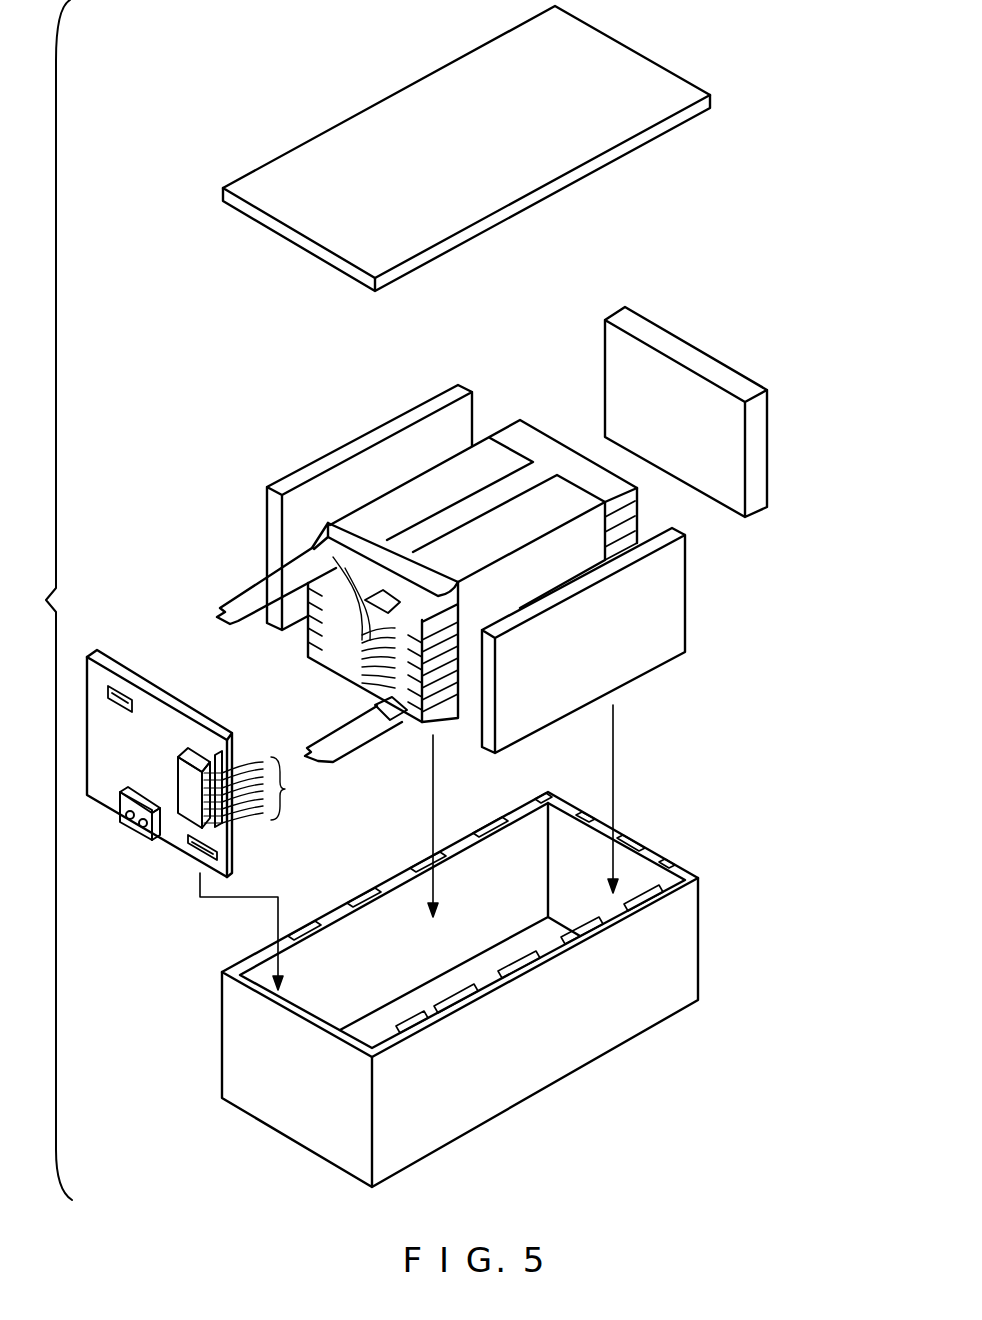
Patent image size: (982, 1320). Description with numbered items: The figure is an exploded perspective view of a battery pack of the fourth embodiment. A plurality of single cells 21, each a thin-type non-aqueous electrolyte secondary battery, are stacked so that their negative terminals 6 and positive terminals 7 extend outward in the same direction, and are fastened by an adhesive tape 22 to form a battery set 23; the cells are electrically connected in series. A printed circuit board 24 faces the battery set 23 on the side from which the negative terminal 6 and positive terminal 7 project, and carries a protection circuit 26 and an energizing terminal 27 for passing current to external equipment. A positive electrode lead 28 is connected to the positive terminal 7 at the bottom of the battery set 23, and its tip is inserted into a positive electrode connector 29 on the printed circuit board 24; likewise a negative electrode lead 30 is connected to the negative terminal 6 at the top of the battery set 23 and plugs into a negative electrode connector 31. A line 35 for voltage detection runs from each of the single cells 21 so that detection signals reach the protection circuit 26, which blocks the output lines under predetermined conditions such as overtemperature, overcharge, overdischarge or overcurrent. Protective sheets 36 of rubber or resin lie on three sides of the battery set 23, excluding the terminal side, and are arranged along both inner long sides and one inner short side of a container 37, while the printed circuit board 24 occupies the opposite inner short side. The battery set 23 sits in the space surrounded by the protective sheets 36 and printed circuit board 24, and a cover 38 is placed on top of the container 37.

The negative terminal 6 is at (307, 553).
The positive terminal 7 is at (392, 610).
The single cell 21 is at (637, 539).
The adhesive tape 22 is at (548, 503).
The battery set 23 is at (413, 478).
The printed circuit board 24 is at (118, 660).
The protection circuit 26 is at (195, 755).
The energizing terminal 27 is at (142, 835).
The positive electrode lead 28 is at (352, 745).
The positive electrode connector 29 is at (217, 852).
The negative electrode lead 30 is at (230, 597).
The negative electrode connector 31 is at (129, 698).
The line for voltage detection 35 is at (345, 655).
The protective sheet 36 is at (332, 462).
The container 37 is at (687, 950).
The cover 38 is at (650, 83).